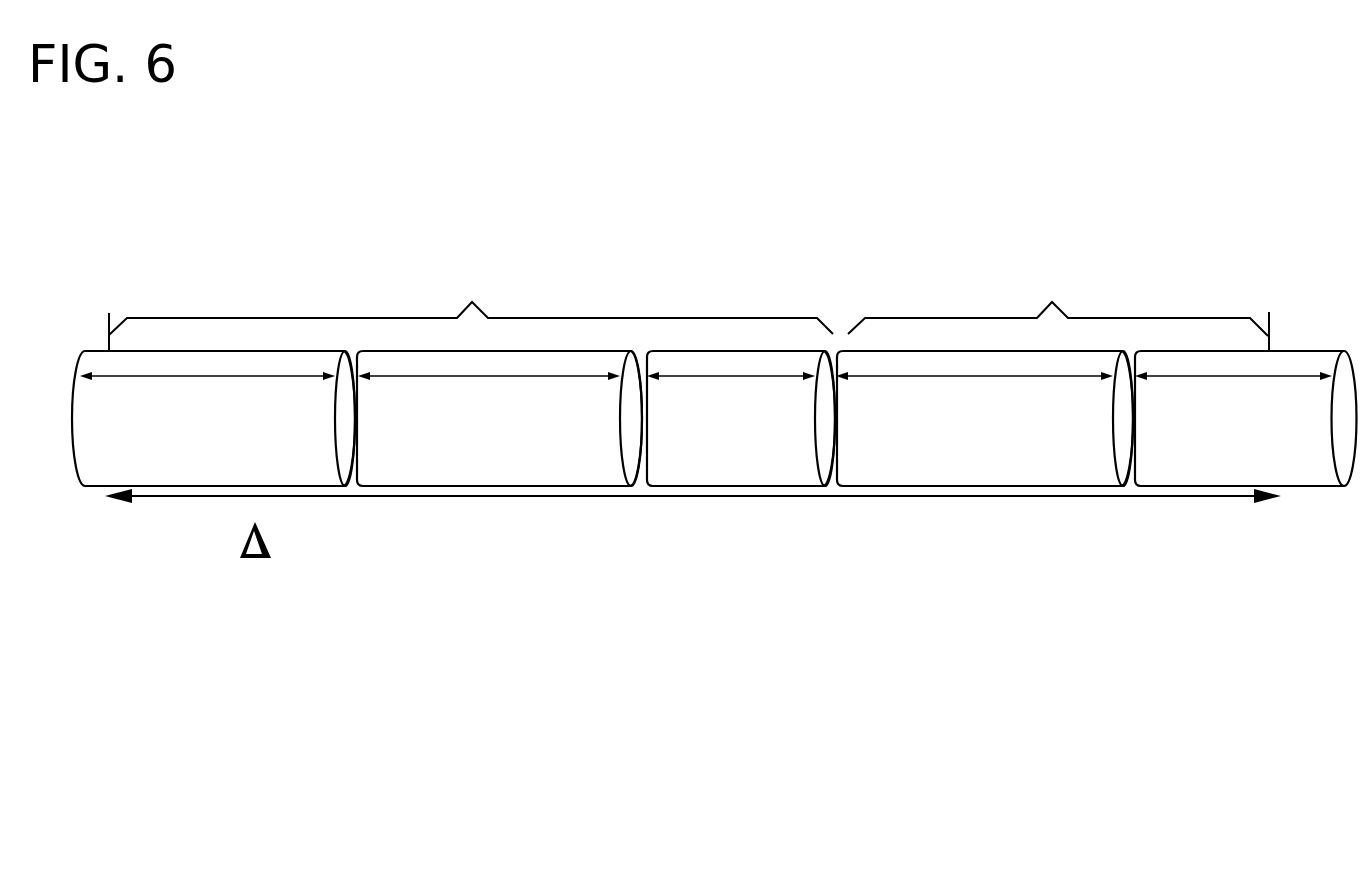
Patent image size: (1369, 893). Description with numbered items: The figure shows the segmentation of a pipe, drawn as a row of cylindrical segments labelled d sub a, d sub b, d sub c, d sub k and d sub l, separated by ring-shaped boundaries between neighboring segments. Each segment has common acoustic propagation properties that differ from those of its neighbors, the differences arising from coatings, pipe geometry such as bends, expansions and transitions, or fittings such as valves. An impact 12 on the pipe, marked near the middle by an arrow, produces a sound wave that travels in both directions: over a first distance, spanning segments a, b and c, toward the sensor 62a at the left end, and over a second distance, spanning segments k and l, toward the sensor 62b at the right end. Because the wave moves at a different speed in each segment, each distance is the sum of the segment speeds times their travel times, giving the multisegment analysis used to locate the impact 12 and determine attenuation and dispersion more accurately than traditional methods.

The impact 12 is at (845, 305).
The sensor 62a is at (108, 322).
The sensor 62b is at (1269, 320).